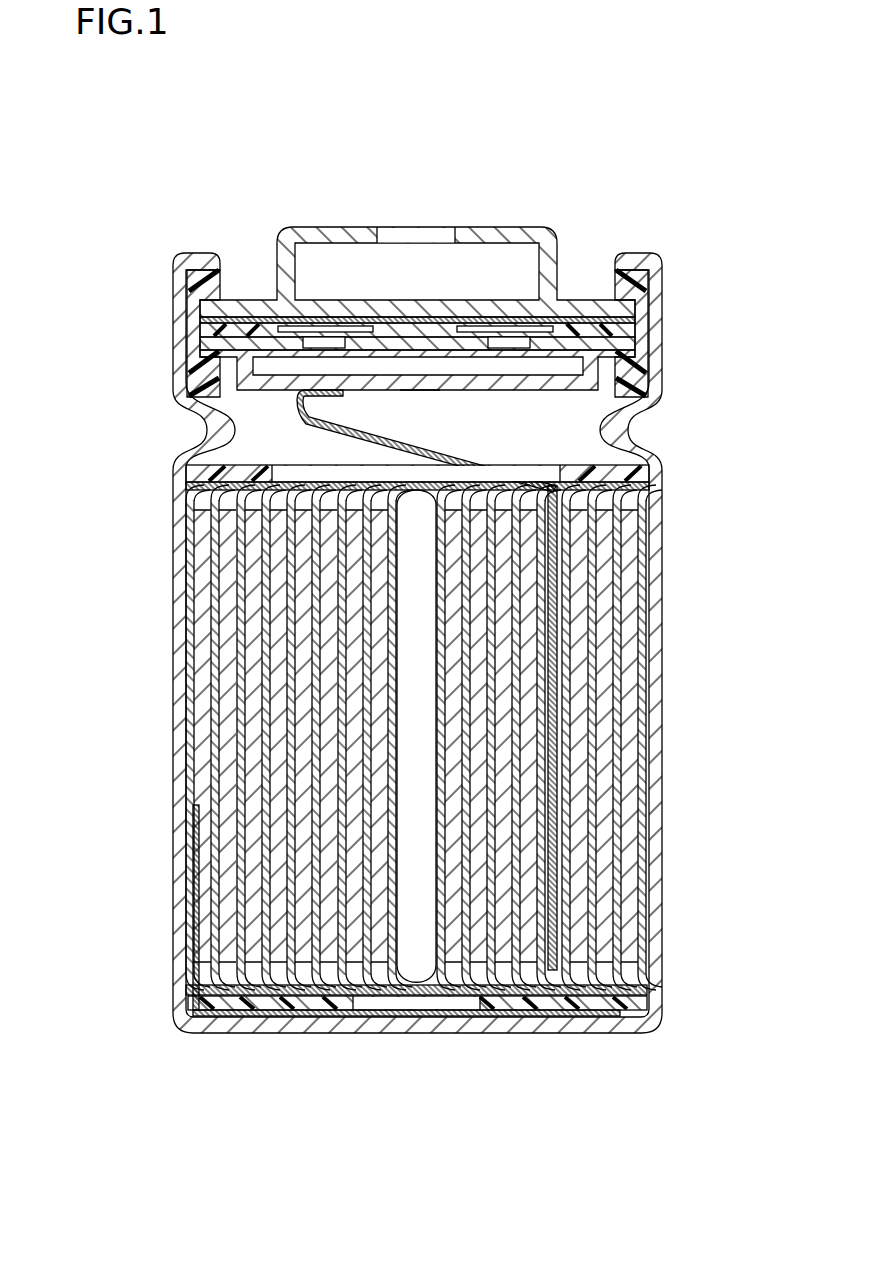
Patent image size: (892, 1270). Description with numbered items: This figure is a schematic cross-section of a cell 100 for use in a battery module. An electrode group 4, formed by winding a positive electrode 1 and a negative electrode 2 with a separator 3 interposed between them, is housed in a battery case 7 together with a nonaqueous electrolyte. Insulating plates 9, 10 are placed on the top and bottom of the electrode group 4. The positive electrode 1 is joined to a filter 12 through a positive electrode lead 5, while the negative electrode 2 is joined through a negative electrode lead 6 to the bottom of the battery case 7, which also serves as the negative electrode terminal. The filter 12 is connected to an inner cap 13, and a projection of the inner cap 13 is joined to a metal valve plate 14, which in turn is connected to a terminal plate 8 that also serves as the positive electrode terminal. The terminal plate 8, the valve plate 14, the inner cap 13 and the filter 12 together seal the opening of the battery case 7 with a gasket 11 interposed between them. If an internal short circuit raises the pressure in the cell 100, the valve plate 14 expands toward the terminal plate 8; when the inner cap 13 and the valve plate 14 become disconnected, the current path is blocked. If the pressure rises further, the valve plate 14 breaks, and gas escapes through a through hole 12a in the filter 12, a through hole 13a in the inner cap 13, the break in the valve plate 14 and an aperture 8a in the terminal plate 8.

The cell 100 is at (665, 172).
The positive electrode 1 is at (605, 757).
The negative electrode 2 is at (630, 726).
The separator 3 is at (645, 686).
The electrode group 4 is at (483, 738).
The positive electrode lead 5 is at (378, 438).
The negative electrode lead 6 is at (445, 1018).
The battery case 7 is at (176, 655).
The terminal plate 8 is at (417, 237).
The aperture 8a is at (414, 238).
The insulating plate 9 is at (640, 477).
The insulating plate 10 is at (640, 1001).
The gasket 11 is at (637, 293).
The filter 12 is at (473, 402).
The through hole 12a is at (420, 390).
The inner cap 13 is at (417, 251).
The through hole 13a is at (333, 343).
The valve plate 14 is at (317, 320).